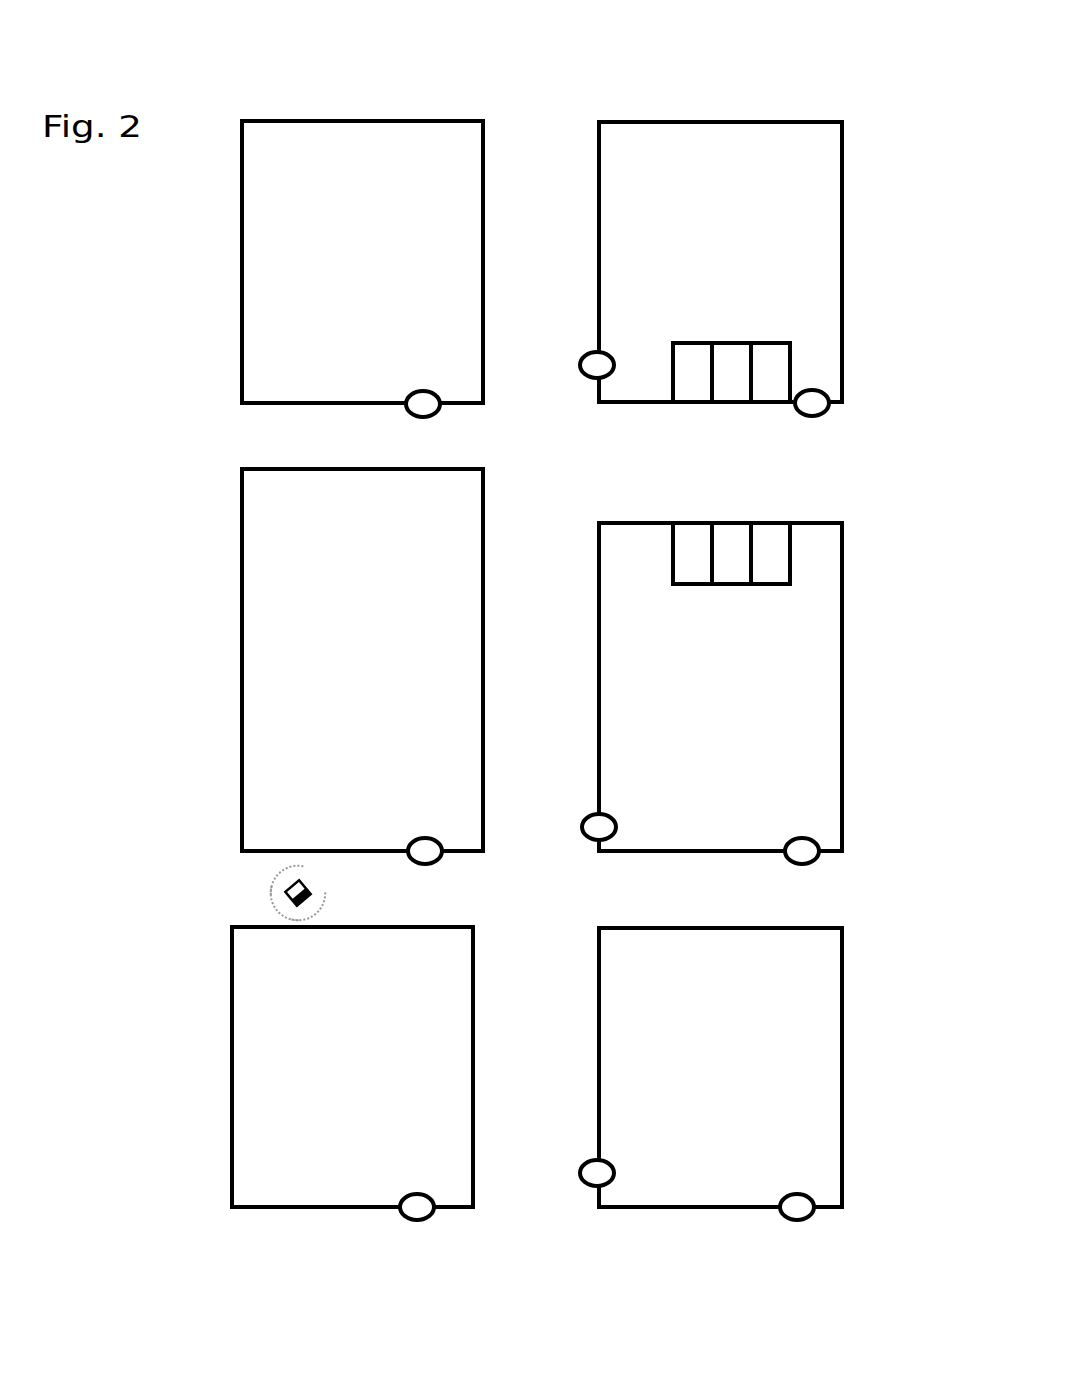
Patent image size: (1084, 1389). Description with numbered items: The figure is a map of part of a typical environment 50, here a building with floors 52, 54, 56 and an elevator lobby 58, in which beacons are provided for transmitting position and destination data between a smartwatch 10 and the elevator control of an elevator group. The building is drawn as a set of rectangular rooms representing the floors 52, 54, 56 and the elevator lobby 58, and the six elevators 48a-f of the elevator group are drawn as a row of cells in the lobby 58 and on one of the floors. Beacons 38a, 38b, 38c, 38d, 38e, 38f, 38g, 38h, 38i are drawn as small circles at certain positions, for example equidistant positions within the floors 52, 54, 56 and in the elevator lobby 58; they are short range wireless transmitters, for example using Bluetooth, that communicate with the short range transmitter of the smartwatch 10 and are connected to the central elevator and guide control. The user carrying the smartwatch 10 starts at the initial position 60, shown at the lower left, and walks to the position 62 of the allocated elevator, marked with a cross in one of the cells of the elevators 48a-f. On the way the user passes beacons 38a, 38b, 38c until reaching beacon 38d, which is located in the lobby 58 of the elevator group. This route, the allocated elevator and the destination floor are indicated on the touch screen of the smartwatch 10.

The environment 50 is at (284, 79).
The floor 52 is at (561, 249).
The floor 54 is at (377, 453).
The floor 56 is at (738, 908).
The elevator lobby 58 is at (741, 488).
The elevators 48a-f is at (732, 317).
The position of the allocated elevator 62 is at (736, 374).
The beacon 38a is at (425, 852).
The beacon 38b is at (599, 827).
The beacon 38c is at (597, 365).
The beacon 38d is at (812, 404).
The beacon 38e is at (802, 852).
The beacon 38f is at (597, 1173).
The beacon 38g is at (797, 1207).
The beacon 38h is at (417, 1207).
The beacon 38i is at (423, 405).
The smartwatch 10 is at (292, 888).
The initial position 60 is at (280, 898).